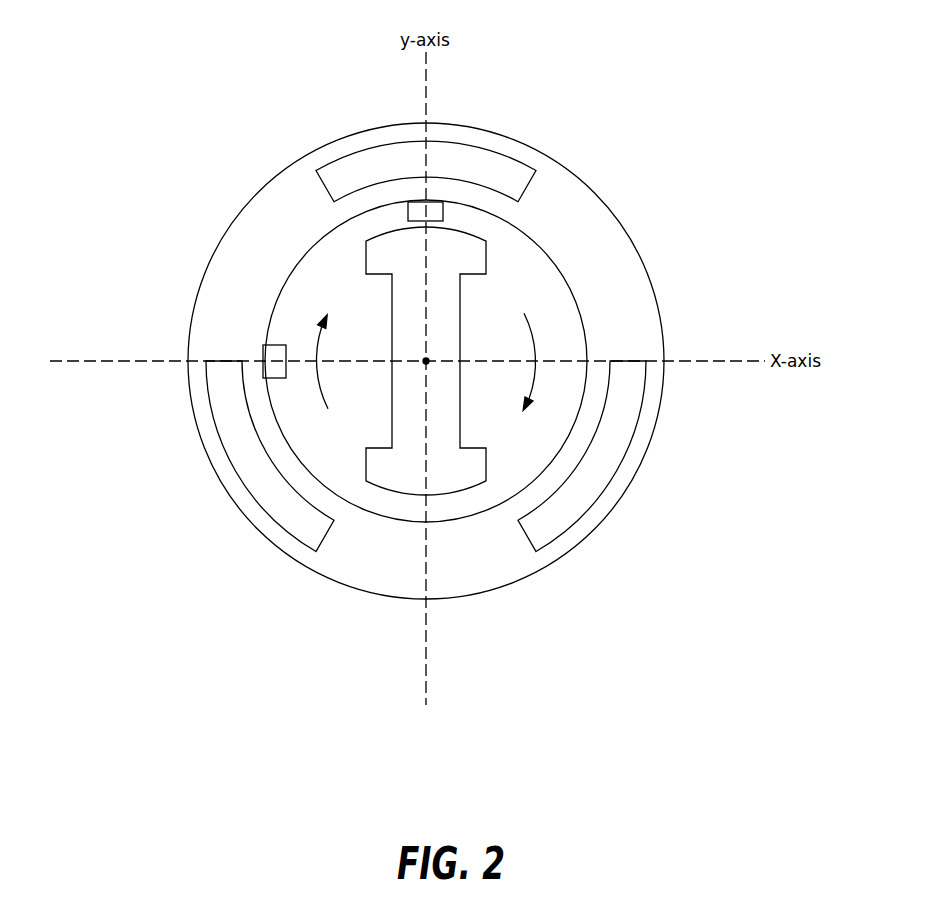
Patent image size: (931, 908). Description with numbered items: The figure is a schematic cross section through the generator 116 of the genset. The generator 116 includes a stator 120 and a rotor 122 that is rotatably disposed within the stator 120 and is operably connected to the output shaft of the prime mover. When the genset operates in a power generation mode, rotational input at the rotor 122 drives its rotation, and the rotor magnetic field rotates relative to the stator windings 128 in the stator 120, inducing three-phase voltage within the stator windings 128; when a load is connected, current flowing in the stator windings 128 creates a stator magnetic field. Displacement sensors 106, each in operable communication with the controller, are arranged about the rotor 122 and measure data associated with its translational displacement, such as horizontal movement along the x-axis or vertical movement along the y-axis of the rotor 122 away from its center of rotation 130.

The generator 116 is at (148, 100).
The stator 120 is at (568, 214).
The rotor 122 is at (460, 313).
The stator windings 128 is at (477, 170).
The displacement sensor 106 is at (418, 210).
The center of rotation 130 is at (430, 360).